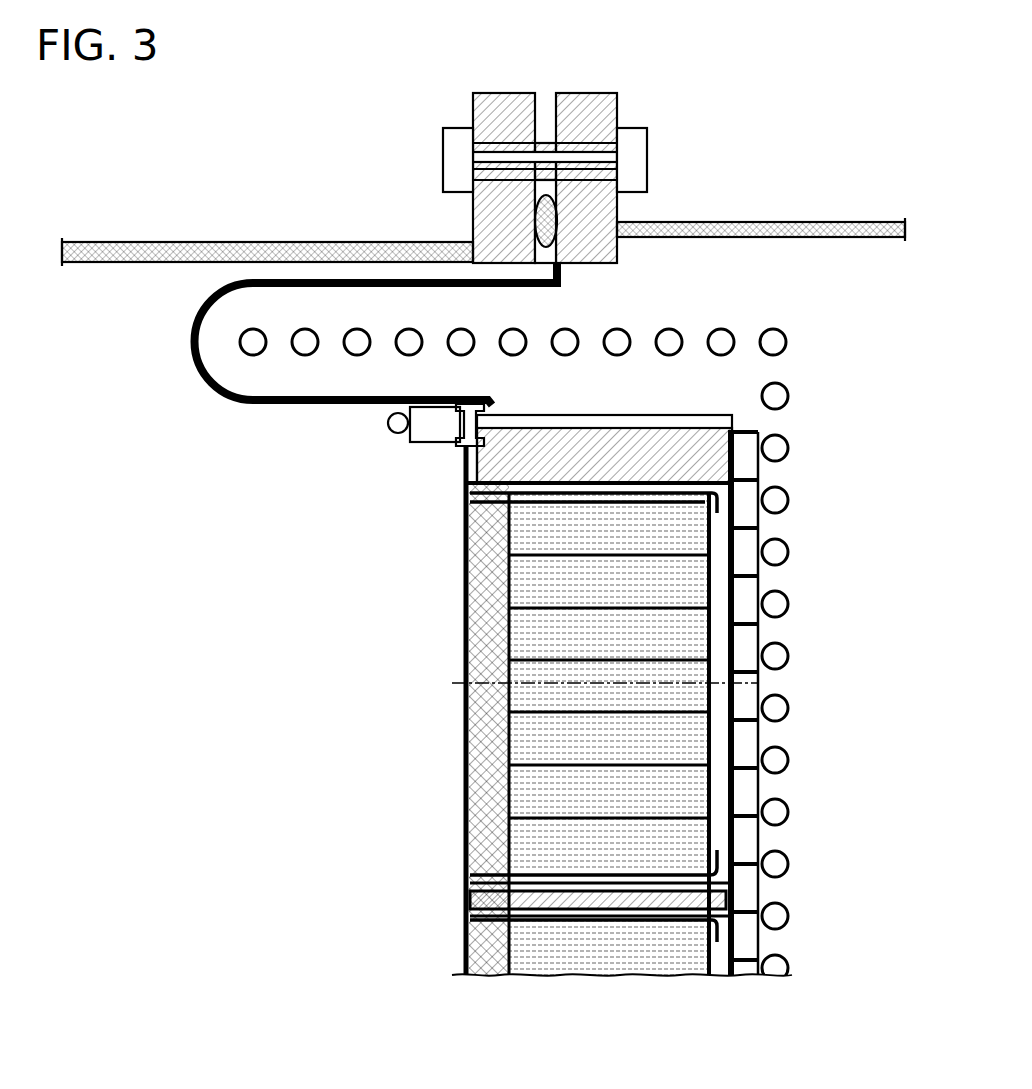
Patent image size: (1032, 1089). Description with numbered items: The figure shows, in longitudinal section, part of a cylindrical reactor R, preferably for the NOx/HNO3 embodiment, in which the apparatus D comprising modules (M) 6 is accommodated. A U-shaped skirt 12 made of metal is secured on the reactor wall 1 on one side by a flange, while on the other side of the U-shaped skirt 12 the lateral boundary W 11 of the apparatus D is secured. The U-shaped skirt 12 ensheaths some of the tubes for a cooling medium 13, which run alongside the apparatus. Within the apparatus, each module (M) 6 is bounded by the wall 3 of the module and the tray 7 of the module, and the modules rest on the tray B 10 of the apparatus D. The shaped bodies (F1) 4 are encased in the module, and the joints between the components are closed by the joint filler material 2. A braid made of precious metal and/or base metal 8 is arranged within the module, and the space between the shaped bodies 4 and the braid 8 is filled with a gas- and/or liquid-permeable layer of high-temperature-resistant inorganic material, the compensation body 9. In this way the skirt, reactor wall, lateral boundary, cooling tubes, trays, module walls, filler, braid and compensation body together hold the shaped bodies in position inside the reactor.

The reactor wall 1 is at (200, 250).
The joint filler material 2 is at (483, 465).
The wall of a module 3 is at (480, 493).
The shaped bodies 4 is at (538, 735).
The module 6 is at (404, 674).
The tray of a module 7 is at (762, 953).
The braid made of precious metal and/or base metal 8 is at (458, 863).
The compensation body 9 is at (482, 598).
The tray B of the apparatus D 10 is at (748, 843).
The lateral boundary W of the apparatus D 11 is at (600, 417).
The U-shaped skirt 12 is at (190, 352).
The pipes for cooling medium 13 is at (788, 610).